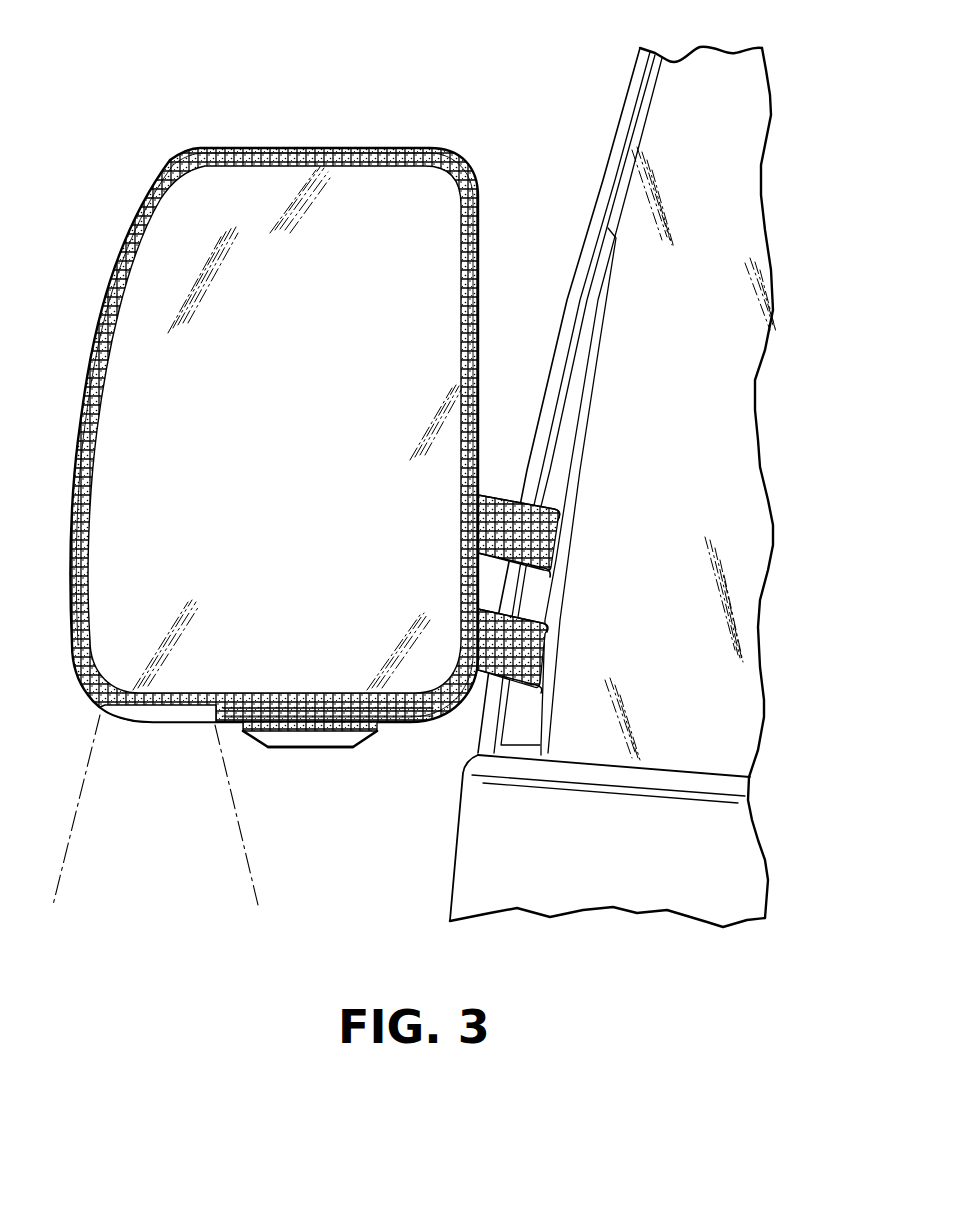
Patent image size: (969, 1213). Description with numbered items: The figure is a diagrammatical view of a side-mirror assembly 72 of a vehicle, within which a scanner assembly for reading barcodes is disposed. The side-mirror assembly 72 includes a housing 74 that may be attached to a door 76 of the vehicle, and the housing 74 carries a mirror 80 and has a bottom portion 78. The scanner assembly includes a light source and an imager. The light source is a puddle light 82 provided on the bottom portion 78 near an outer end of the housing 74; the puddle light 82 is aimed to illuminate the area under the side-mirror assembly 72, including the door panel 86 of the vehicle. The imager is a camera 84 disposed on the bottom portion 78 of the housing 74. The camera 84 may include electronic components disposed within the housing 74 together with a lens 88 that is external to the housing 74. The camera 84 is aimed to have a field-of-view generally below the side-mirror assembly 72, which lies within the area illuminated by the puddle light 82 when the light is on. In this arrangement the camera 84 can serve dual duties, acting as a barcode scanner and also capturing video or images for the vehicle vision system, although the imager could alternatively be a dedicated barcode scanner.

The side-mirror assembly 72 is at (306, 488).
The housing 74 is at (168, 163).
The door 76 is at (723, 838).
The bottom portion 78 is at (240, 700).
The mirror 80 is at (370, 185).
The puddle light 82 is at (155, 732).
The camera 84 is at (313, 765).
The door panel 86 is at (605, 860).
The lens 88 is at (333, 737).